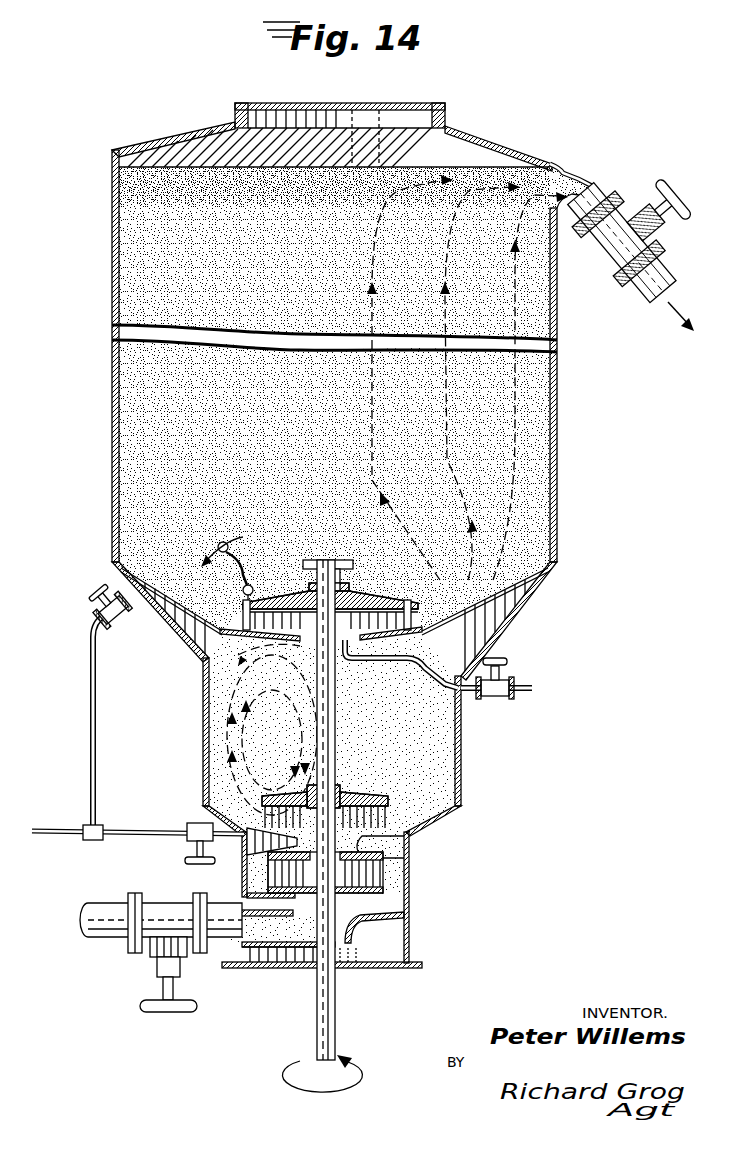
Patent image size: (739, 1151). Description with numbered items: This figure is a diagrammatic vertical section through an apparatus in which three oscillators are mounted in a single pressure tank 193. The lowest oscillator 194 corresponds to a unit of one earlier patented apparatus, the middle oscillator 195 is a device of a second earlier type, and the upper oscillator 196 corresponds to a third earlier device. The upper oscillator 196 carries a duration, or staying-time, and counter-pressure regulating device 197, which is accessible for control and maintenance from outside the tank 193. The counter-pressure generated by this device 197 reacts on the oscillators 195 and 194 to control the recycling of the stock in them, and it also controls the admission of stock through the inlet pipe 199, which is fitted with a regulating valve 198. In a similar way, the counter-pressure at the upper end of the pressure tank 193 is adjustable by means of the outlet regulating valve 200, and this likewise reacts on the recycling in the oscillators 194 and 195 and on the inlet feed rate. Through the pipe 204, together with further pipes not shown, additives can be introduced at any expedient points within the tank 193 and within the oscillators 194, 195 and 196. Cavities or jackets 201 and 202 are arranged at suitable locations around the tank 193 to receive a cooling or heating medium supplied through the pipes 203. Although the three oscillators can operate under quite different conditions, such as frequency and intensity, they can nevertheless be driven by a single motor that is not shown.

The pressure tank 193 is at (557, 452).
The oscillator 194 is at (393, 878).
The oscillator 195 is at (350, 800).
The oscillator 196 is at (370, 607).
The duration and counter-pressure regulating device 197 is at (240, 578).
The regulating valve 198 is at (165, 908).
The inlet pipe 199 is at (283, 935).
The outlet regulating valve 200 is at (609, 267).
The cavity or jacket 201 is at (187, 622).
The cavity or jacket 202 is at (393, 842).
The pipes 203 is at (97, 723).
The pipe 204 is at (517, 688).